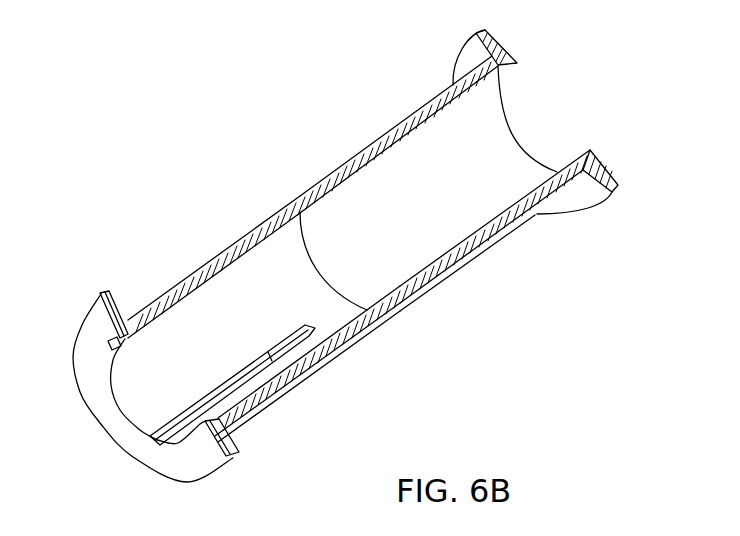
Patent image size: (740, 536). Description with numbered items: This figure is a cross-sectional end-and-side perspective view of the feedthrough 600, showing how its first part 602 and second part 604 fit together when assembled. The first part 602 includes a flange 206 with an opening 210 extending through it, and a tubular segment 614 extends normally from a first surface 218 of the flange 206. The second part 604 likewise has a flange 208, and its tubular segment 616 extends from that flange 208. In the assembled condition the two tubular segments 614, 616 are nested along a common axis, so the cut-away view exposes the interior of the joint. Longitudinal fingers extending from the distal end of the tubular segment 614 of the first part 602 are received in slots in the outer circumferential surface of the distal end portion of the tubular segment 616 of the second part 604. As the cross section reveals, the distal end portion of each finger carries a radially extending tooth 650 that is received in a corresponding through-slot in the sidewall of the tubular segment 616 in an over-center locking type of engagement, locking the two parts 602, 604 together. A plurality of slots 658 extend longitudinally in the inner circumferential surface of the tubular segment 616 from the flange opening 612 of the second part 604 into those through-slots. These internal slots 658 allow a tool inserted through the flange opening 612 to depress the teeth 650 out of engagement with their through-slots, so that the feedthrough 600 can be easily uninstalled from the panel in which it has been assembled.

The feedthrough 600 is at (168, 113).
The first part 602 is at (394, 110).
The second part 604 is at (209, 246).
The flange 206 is at (500, 58).
The flange 208 is at (106, 293).
The opening 210 is at (518, 134).
The first surface 218 is at (577, 206).
The flange opening 612 is at (137, 408).
The slots 658 is at (147, 438).
The tooth 650 is at (301, 326).
The tubular segment 614 is at (467, 248).
The tubular segment 616 is at (322, 356).